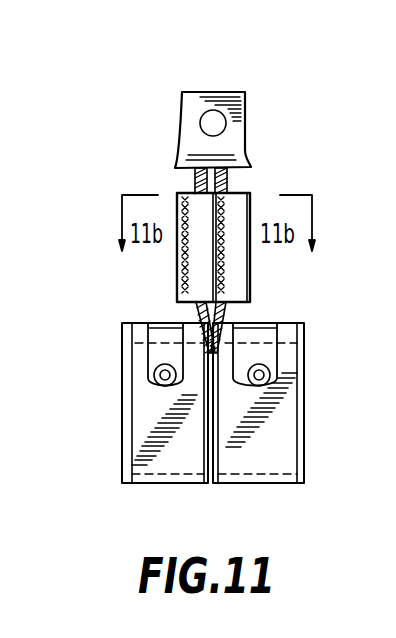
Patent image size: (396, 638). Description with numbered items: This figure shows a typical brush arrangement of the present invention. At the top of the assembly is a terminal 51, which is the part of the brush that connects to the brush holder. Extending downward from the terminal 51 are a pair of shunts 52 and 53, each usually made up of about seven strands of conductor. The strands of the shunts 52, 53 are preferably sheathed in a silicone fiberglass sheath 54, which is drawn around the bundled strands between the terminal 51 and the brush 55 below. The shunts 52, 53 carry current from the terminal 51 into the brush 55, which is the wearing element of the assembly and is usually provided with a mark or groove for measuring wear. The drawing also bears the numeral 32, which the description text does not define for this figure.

The terminal 51 is at (182, 92).
The shunt 52 is at (252, 263).
The shunt 53 is at (177, 197).
The silicone fiberglass sheath 54 is at (245, 288).
The brush 32 is at (123, 402).
The brush 55 is at (305, 437).